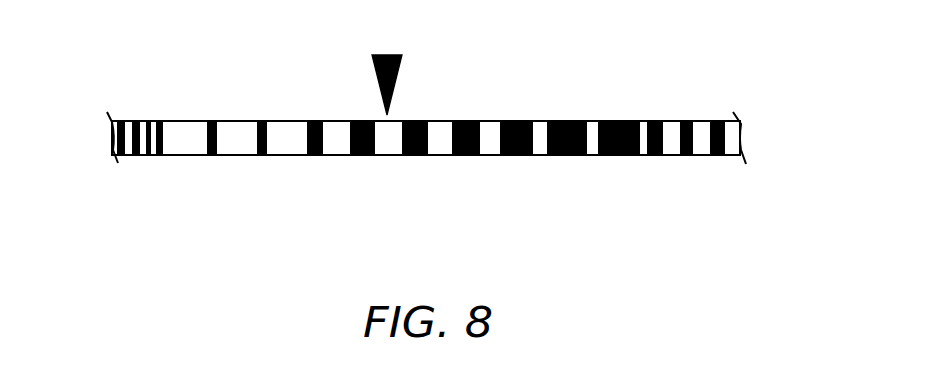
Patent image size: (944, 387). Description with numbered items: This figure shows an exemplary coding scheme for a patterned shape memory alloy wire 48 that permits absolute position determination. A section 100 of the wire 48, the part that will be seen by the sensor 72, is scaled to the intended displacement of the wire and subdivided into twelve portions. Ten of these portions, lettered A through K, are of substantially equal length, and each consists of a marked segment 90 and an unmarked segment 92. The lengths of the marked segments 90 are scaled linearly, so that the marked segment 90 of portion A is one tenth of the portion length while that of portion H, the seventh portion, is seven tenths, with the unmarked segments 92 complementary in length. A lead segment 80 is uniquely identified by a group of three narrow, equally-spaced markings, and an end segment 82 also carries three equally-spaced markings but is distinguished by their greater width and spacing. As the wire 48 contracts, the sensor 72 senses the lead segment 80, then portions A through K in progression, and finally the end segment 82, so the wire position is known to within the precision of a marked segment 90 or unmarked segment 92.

The wire 48 is at (243, 121).
The sensor 72 is at (398, 80).
The lead segment 80 is at (117, 158).
The end segment 82 is at (727, 158).
The marked segment 90 is at (212, 121).
The unmarked segment 92 is at (379, 100).
The section 100 is at (426, 173).